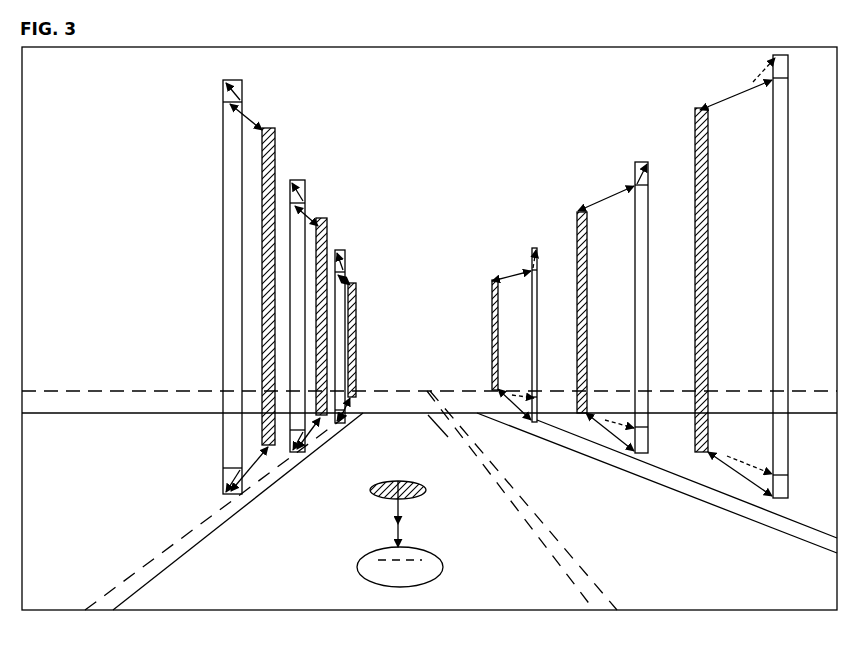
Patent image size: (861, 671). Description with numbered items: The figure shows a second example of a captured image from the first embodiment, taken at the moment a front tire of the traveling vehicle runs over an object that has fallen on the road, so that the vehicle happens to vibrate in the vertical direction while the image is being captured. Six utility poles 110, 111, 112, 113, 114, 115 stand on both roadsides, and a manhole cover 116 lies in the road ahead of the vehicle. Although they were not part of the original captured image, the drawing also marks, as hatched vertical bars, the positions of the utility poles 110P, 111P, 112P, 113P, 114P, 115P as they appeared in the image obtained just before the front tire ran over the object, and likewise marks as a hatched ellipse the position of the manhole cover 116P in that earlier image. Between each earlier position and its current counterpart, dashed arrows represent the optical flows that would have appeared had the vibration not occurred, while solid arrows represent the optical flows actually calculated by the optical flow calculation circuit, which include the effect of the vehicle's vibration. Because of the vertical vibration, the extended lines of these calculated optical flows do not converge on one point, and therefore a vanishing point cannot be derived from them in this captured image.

The utility pole 110 is at (223, 297).
The utility pole position 110P is at (271, 133).
The utility pole 111 is at (289, 180).
The utility pole position 111P is at (328, 222).
The utility pole 112 is at (336, 250).
The utility pole position 112P is at (357, 332).
The utility pole 113 is at (789, 478).
The utility pole position 113P is at (710, 282).
The utility pole 114 is at (648, 215).
The utility pole position 114P is at (577, 222).
The utility pole 115 is at (538, 278).
The utility pole position 115P is at (492, 310).
The manhole cover 116 is at (442, 567).
The manhole cover position 116P is at (430, 464).